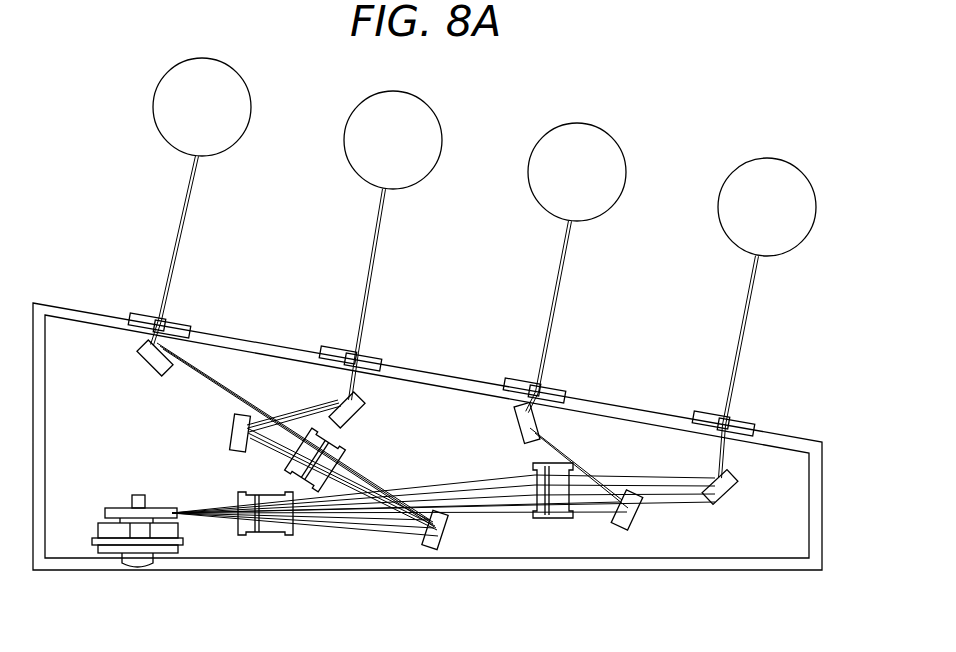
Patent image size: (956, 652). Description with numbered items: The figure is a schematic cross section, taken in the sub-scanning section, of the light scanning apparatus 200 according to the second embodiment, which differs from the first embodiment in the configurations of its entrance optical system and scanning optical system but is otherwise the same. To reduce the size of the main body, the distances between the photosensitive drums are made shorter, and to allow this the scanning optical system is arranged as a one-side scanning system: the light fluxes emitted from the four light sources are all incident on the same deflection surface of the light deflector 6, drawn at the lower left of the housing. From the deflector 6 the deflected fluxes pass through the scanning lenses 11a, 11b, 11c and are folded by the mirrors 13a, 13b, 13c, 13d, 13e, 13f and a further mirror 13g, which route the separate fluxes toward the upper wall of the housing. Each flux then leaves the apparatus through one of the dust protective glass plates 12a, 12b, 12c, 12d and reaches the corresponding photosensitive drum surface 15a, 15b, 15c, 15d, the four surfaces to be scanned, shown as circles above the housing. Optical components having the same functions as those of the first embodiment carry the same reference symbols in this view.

The light scanning apparatus 200 is at (112, 582).
The light deflector 6 is at (118, 508).
The scanning lens 11a is at (238, 494).
The scanning lens 11b is at (535, 466).
The scanning lens 11c is at (345, 458).
The dust protective glass plate 12a is at (738, 422).
The dust protective glass plate 12b is at (548, 388).
The dust protective glass plate 12c is at (365, 355).
The dust protective glass plate 12d is at (178, 320).
The mirror 13a is at (725, 500).
The mirror 13b is at (642, 520).
The mirror 13c is at (516, 425).
The mirror 13d is at (231, 433).
The mirror 13e is at (362, 410).
The mirror 13f is at (450, 530).
The mirror 13g is at (142, 358).
The photosensitive drum surface 15a is at (778, 165).
The photosensitive drum surface 15b is at (605, 140).
The photosensitive drum surface 15c is at (430, 122).
The photosensitive drum surface 15d is at (243, 100).